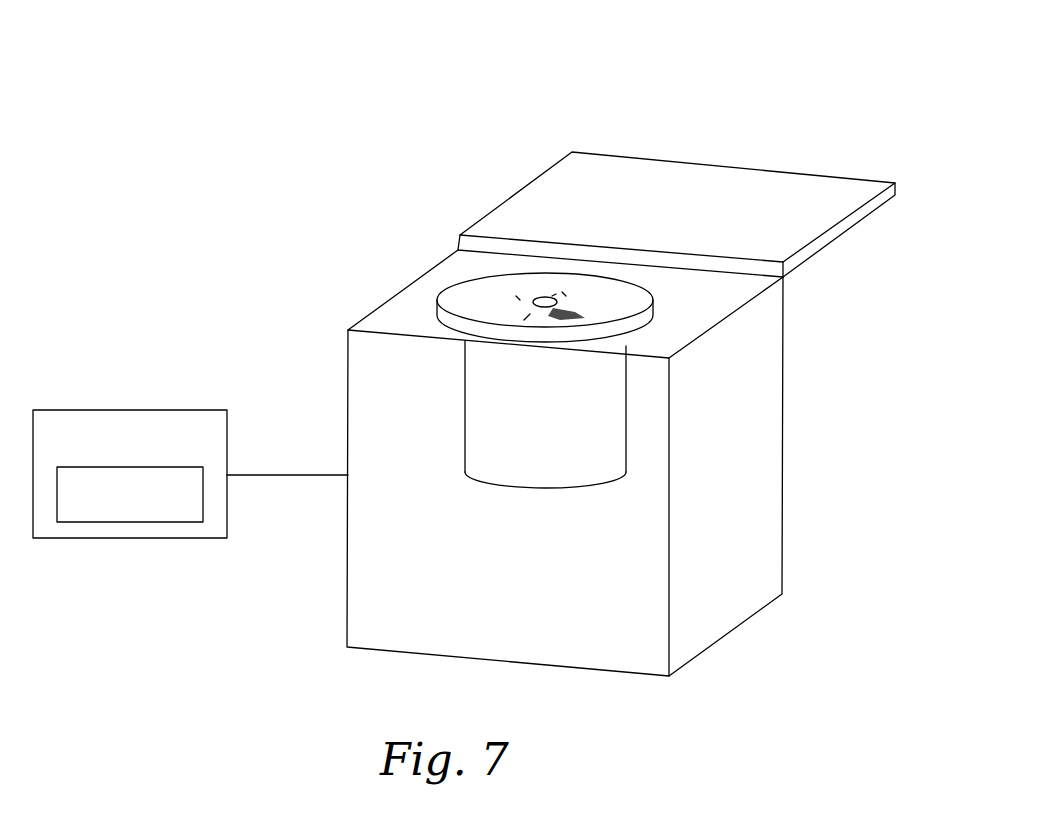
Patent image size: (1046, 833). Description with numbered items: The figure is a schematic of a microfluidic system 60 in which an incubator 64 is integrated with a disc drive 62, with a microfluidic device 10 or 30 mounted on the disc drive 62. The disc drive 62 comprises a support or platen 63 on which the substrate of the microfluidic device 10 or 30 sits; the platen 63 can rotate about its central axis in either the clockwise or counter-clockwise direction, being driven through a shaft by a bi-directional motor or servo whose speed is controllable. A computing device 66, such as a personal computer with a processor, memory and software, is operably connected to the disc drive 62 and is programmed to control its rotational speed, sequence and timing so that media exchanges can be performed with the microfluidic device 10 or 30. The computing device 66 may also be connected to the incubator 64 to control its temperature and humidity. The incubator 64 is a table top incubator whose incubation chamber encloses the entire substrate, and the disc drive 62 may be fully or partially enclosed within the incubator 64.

The microfluidic system 60 is at (464, 347).
The disc drive 62 is at (505, 425).
The platen 63 is at (540, 282).
The incubator 64 is at (757, 494).
The computing device 66 is at (194, 410).
The microfluidic device 10 is at (507, 285).
The microfluidic device 30 is at (455, 293).